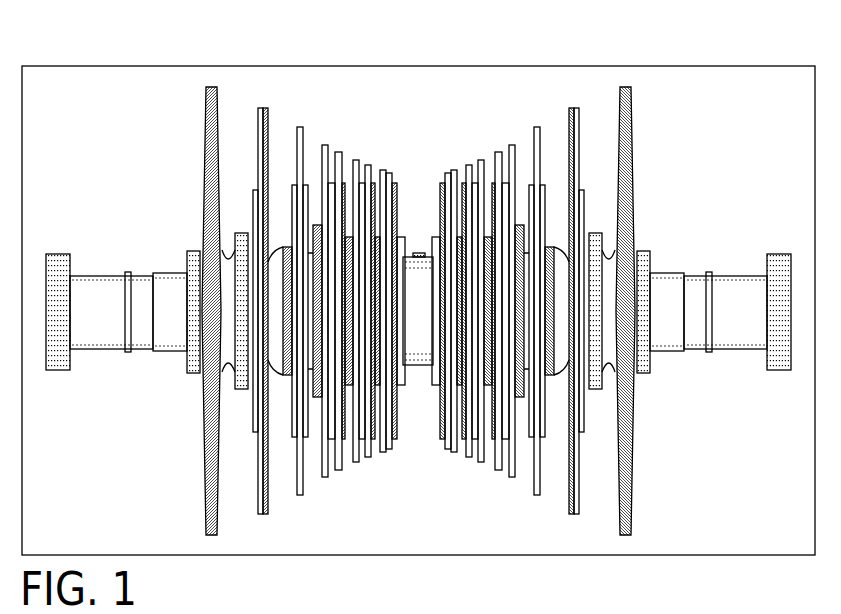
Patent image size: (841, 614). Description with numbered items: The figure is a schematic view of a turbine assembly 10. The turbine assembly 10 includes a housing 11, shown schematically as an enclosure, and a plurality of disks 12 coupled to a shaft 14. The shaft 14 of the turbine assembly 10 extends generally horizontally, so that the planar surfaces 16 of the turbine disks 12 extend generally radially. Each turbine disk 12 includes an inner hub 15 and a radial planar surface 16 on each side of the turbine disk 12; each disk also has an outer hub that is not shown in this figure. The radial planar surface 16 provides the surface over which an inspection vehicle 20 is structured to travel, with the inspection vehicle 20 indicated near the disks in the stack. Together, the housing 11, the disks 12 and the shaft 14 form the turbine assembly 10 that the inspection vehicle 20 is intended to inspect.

The turbine assembly 10 is at (617, 52).
The housing 11 is at (103, 66).
The disks 12 is at (470, 107).
The shaft 14 is at (112, 285).
The inner hub 15 is at (285, 247).
The radial planar surface 16 is at (308, 410).
The inspection vehicle 20 is at (308, 253).